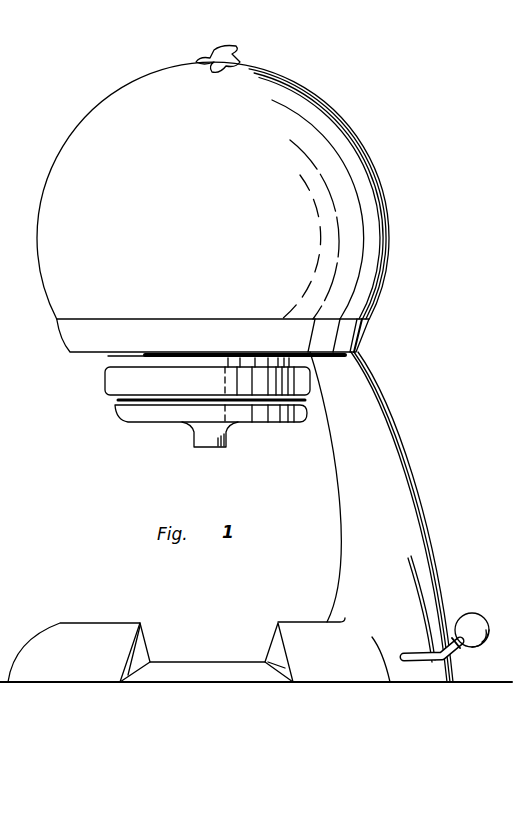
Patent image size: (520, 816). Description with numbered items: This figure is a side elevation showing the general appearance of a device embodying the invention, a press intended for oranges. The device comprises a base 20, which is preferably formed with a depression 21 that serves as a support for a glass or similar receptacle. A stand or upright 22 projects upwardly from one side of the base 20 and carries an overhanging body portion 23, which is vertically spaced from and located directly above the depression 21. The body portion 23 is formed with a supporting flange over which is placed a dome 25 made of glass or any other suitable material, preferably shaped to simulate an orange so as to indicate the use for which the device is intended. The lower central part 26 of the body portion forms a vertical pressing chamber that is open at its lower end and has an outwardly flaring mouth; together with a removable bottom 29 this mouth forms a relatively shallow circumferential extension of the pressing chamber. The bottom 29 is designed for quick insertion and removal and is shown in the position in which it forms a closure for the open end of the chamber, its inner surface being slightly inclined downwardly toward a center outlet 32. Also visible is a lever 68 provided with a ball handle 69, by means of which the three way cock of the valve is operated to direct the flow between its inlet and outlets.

The base 20 is at (73, 636).
The depression 21 is at (222, 655).
The stand or upright 22 is at (389, 441).
The overhanging body portion 23 is at (125, 361).
The dome 25 is at (48, 224).
The lower central part of the body portion 26 is at (80, 331).
The removable bottom 29 is at (303, 414).
The center outlet 32 is at (220, 432).
The lever 68 is at (462, 658).
The ball handle 69 is at (470, 624).